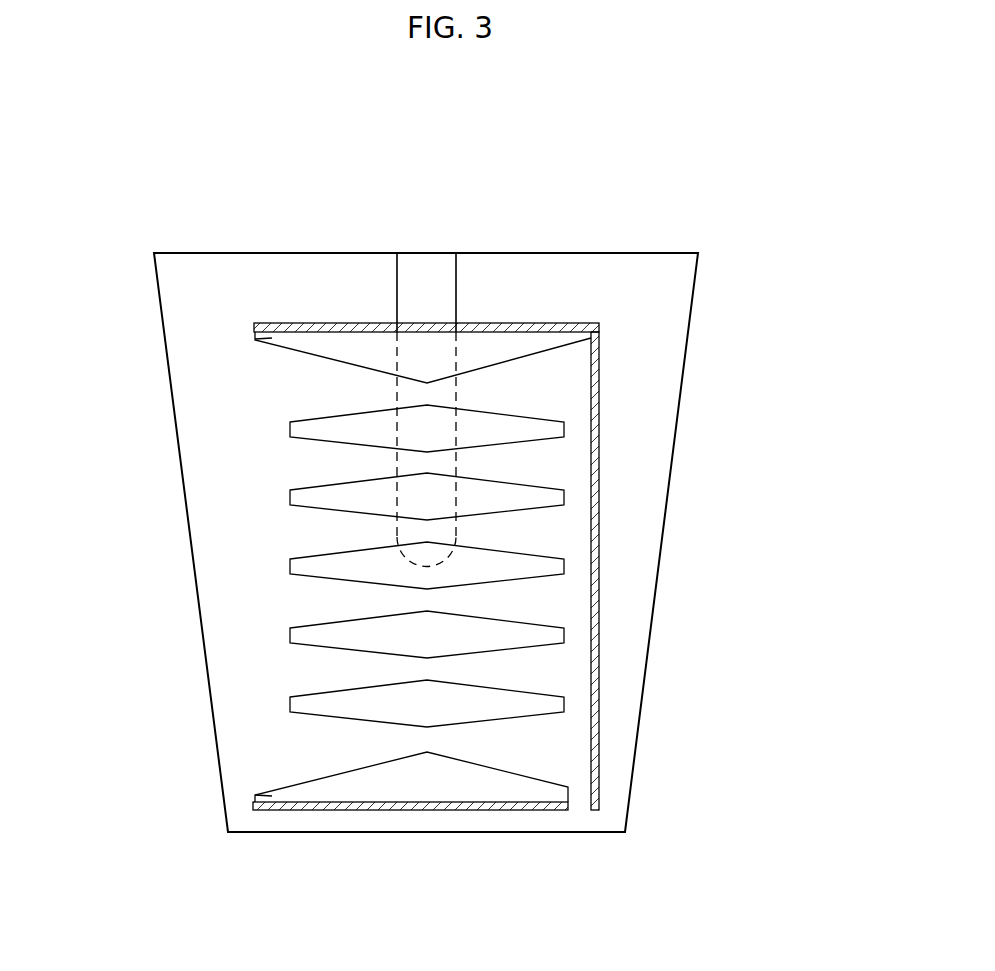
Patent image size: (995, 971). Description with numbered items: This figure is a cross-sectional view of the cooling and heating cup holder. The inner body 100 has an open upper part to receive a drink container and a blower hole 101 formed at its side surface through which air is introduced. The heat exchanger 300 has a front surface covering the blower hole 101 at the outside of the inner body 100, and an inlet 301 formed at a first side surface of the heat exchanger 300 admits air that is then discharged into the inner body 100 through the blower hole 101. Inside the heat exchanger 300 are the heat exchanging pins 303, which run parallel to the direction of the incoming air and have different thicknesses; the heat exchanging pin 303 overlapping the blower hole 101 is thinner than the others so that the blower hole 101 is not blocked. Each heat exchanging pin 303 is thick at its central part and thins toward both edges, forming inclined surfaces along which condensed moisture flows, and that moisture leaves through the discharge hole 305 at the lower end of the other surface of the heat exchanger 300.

The inner body 100 is at (687, 346).
The blower hole 101 is at (442, 285).
The heat exchanger 300 is at (543, 323).
The inlet 301 is at (265, 653).
The heat exchanging pins 303 is at (290, 428).
The discharge hole 305 is at (584, 792).